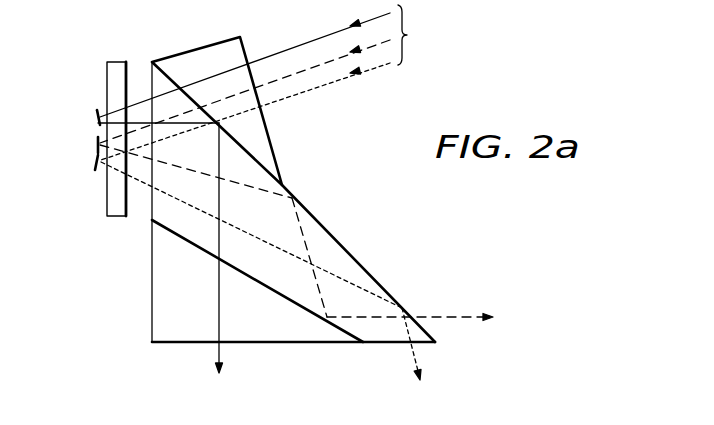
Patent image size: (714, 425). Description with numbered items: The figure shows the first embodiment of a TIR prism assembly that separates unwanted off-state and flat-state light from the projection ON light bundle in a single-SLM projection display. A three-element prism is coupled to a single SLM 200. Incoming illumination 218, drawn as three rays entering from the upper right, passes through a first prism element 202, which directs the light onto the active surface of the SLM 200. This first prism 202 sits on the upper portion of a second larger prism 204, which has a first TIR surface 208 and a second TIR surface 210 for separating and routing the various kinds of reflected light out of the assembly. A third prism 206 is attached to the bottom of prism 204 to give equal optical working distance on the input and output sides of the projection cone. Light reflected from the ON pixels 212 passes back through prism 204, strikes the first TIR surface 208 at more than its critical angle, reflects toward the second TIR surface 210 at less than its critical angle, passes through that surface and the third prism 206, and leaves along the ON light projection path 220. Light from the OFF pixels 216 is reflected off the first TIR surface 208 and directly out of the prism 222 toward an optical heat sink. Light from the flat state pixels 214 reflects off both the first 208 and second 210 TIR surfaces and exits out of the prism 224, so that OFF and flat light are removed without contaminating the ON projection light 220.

The SLM 200 is at (113, 62).
The first prism element 202 is at (202, 48).
The second larger prism 204 is at (152, 212).
The third prism 206 is at (152, 280).
The first TIR surface 208 is at (323, 228).
The second TIR surface 210 is at (250, 276).
The ON pixels 212 is at (97, 118).
The flat state pixels 214 is at (97, 145).
The OFF pixels 216 is at (95, 170).
The incoming illumination 218 is at (275, 82).
The ON light projection path 220 is at (213, 348).
The OFF light exiting the prism 222 is at (413, 348).
The flat light exiting the prism 224 is at (440, 317).